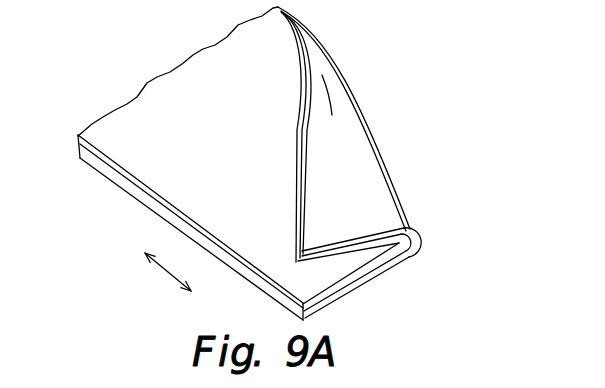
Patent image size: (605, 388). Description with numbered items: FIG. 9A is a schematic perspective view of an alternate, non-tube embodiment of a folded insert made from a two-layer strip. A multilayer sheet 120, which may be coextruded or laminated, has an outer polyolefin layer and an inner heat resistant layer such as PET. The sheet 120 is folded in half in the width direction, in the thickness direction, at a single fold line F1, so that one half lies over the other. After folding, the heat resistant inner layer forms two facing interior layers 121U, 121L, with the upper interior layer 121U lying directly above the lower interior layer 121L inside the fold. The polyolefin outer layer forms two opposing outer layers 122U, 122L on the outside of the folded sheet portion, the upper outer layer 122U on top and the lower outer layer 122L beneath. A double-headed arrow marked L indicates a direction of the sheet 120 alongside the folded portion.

The multilayer sheet 120 is at (278, 174).
The upper outer layer 122U is at (377, 237).
The upper interior layer 121U is at (359, 238).
The fold line F1 is at (415, 238).
The lower interior layer 121L is at (377, 270).
The lower outer layer 122L is at (352, 290).
The longitudinal direction L is at (170, 279).